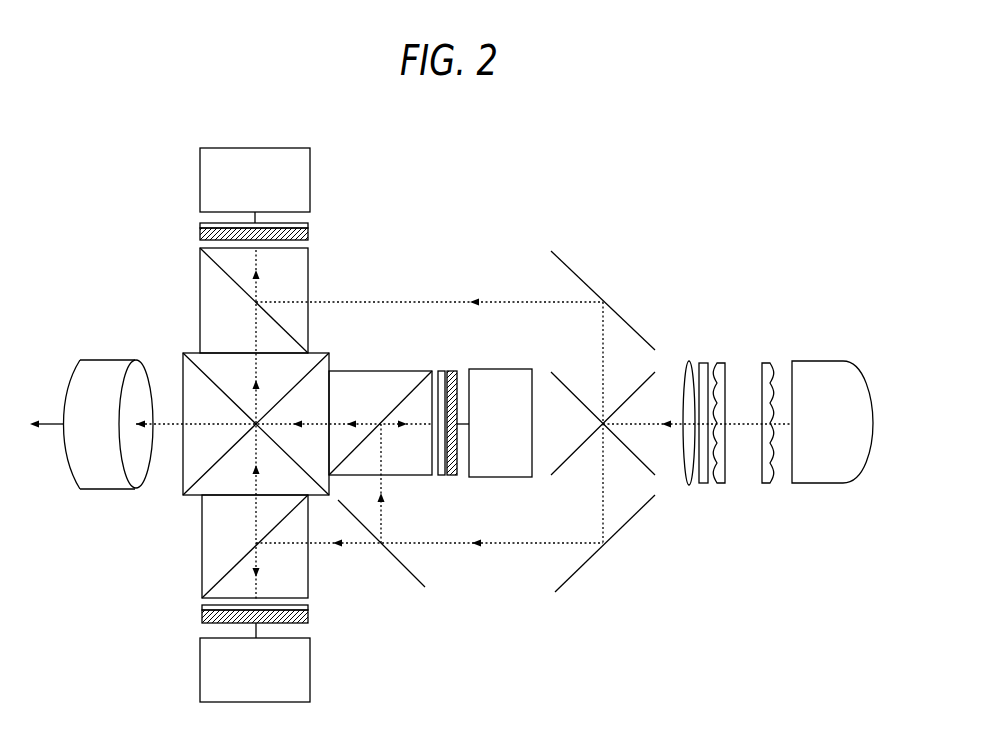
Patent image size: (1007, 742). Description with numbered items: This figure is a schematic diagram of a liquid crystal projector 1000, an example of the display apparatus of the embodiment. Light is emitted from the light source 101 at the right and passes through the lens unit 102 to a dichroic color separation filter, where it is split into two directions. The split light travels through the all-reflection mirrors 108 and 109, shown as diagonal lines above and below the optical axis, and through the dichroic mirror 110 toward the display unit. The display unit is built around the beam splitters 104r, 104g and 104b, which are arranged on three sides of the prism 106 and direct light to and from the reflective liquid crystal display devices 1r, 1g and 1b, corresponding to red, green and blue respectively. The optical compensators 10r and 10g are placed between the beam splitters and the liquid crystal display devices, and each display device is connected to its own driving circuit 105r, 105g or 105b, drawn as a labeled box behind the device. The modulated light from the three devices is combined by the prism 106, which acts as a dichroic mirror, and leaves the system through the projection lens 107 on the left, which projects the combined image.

The liquid crystal projector 1000 is at (750, 212).
The light source 101 is at (815, 360).
The lens unit 102 is at (770, 351).
The beam splitter 104b is at (295, 267).
The beam splitter 104g is at (378, 387).
The beam splitter 104r is at (308, 568).
The driving circuit 105b is at (310, 178).
The driving circuit 105g is at (500, 369).
The driving circuit 105r is at (312, 665).
The prism 106 is at (192, 472).
The projection lens 107 is at (98, 377).
The all-reflection mirror 108 is at (572, 577).
The all-reflection mirror 109 is at (569, 262).
The dichroic mirror 110 is at (423, 577).
The liquid crystal display device 1b is at (308, 227).
The liquid crystal display device 1g is at (445, 370).
The liquid crystal display device 1r is at (308, 610).
The optical compensator 10g is at (442, 477).
The optical compensator 10r is at (200, 223).